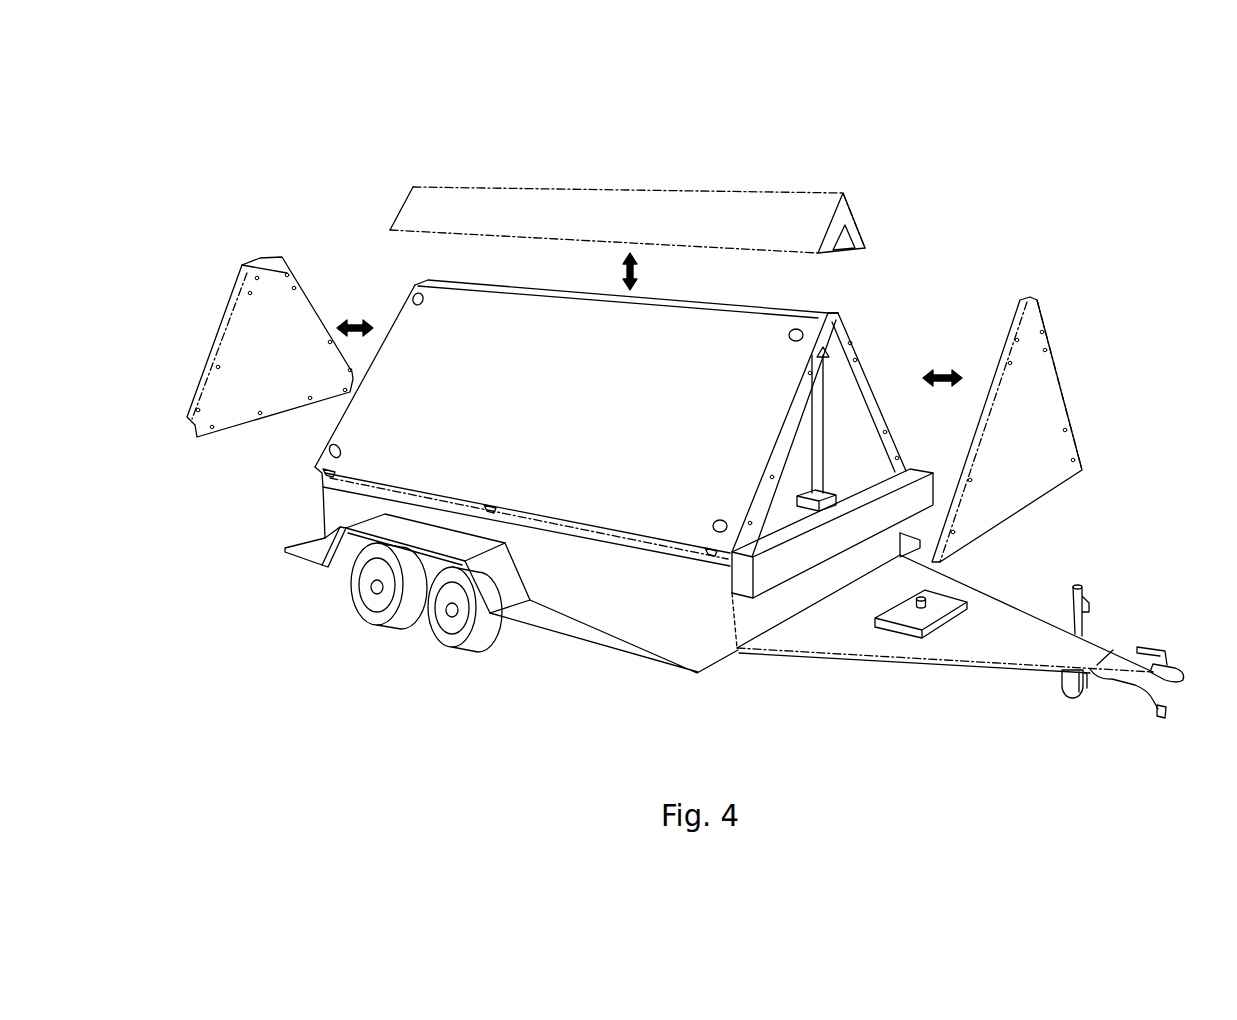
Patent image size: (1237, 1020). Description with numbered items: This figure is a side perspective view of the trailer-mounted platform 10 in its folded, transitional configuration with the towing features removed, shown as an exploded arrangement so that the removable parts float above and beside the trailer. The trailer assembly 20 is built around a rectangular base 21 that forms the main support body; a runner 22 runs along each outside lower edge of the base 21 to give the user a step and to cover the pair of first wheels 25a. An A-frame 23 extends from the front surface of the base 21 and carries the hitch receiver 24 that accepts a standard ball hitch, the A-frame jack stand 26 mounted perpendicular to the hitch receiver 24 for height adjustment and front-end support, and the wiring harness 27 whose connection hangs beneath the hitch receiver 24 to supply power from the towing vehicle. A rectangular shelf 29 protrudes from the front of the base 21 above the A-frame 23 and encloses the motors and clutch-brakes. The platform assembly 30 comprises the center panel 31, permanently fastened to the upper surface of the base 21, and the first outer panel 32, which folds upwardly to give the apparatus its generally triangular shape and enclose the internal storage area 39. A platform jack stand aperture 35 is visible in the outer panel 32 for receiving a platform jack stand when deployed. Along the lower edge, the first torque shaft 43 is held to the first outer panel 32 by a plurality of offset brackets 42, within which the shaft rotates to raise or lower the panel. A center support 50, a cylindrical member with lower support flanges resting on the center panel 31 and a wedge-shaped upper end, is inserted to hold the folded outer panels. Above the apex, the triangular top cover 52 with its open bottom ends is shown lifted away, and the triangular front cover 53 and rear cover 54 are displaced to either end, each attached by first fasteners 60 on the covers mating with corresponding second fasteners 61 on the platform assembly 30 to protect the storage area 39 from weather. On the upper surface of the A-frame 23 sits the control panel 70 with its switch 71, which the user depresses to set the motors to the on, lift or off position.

The trailer-mounted platform 10 is at (258, 112).
The trailer assembly 20 is at (275, 580).
The base 21 is at (617, 587).
The runner 22 is at (308, 553).
The A-frame 23 is at (998, 613).
The hitch receiver 24 is at (1172, 668).
The first wheels 25a is at (455, 618).
The A-frame jack stand 26 is at (1067, 685).
The wiring harness 27 is at (1158, 716).
The shelf 29 is at (772, 570).
The platform assembly 30 is at (396, 282).
The center panel 31 is at (335, 487).
The first outer panel 32 is at (344, 420).
The platform jack stand aperture 35 is at (415, 285).
The internal storage area 39 is at (796, 442).
The offset brackets 42 is at (328, 473).
The first torque shaft 43 is at (640, 541).
The center support 50 is at (823, 418).
The top cover 52 is at (684, 200).
The front cover 53 is at (1050, 396).
The rear cover 54 is at (297, 320).
The first fasteners 60 is at (258, 280).
The second fasteners 61 is at (856, 352).
The control panel 70 is at (908, 635).
The switch 71 is at (898, 612).